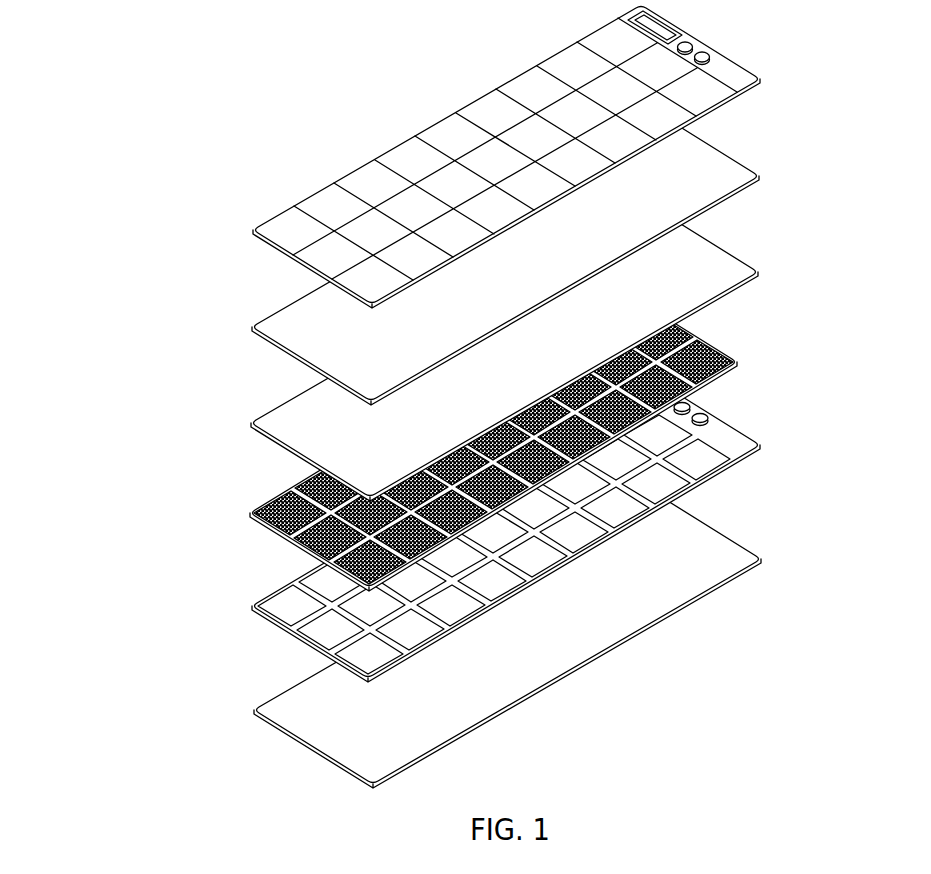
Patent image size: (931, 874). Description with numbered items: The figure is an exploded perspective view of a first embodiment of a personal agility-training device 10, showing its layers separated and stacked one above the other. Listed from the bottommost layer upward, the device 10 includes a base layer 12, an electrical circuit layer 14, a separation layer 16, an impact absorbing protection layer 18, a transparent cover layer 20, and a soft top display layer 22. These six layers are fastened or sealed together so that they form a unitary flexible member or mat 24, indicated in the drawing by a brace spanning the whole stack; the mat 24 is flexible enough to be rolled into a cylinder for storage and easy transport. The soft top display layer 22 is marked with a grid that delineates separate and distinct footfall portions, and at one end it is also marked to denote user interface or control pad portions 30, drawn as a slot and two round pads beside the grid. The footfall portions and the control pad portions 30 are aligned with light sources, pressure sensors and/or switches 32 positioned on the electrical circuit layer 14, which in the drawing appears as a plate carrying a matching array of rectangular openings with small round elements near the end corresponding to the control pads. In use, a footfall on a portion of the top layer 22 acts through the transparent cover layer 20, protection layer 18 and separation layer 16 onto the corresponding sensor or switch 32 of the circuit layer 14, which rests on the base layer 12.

The agility-training device 10 is at (127, 130).
The base layer 12 is at (753, 543).
The electrical circuit layer 14 is at (747, 433).
The separation layer 16 is at (738, 355).
The impact absorbing protection layer 18 is at (745, 256).
The transparent cover layer 20 is at (752, 164).
The soft top display layer 22 is at (758, 68).
The mat 24 is at (217, 208).
The user interface or control pad portions 30 is at (720, 50).
The light sources, pressure sensors and/or switches 32 is at (703, 455).